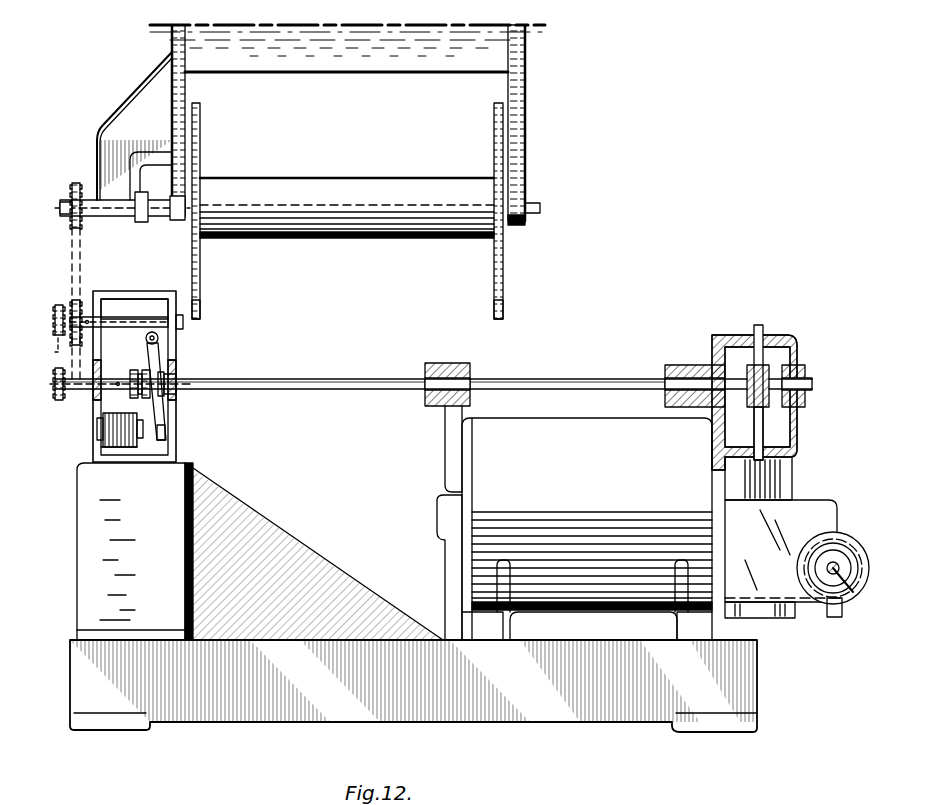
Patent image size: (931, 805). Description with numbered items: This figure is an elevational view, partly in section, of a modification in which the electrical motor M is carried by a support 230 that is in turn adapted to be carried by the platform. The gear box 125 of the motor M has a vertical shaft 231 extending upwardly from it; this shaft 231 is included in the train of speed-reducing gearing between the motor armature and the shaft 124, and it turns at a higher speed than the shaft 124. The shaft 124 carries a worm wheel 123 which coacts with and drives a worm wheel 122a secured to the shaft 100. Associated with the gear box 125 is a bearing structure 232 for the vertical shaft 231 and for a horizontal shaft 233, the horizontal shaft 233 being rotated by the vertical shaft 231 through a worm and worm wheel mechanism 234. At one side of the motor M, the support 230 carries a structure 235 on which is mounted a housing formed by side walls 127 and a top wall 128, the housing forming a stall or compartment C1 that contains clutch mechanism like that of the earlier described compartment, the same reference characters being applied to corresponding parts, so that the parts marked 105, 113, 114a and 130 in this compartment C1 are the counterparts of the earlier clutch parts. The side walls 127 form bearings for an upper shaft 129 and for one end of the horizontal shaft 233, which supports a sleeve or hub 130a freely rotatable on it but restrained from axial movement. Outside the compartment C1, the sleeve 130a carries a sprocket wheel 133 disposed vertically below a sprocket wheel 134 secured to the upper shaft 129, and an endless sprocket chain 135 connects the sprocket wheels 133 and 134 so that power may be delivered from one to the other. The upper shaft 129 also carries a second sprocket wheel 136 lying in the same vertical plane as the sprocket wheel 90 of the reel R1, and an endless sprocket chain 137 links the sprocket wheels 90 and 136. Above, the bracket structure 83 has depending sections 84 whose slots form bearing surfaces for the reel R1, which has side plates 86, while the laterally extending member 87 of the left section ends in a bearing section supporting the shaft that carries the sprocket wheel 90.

The bracket structure 83 is at (537, 57).
The depending sections 84 is at (202, 128).
The side plates 86 is at (202, 270).
The laterally extending member 87 is at (140, 88).
The sprocket wheel 90 is at (78, 185).
The shaft 100 is at (810, 610).
The main shaft 105 is at (176, 376).
The lever 113 is at (155, 432).
The solenoid armature 114a is at (112, 444).
The worm wheel 122a is at (835, 620).
The worm wheel 123 is at (843, 548).
The shaft 124 is at (846, 586).
The gear box 125 is at (812, 502).
The side walls 127 is at (172, 416).
The top wall 128 is at (117, 294).
The upper shaft 129 is at (140, 326).
The clutch member 130 is at (103, 392).
The sleeve or hub 130a is at (75, 392).
The sprocket wheel 133 is at (63, 397).
The sprocket wheel 134 is at (62, 304).
The endless sprocket chain 135 is at (55, 352).
The second sprocket wheel 136 is at (80, 282).
The endless sprocket chain 137 is at (72, 240).
The support 230 is at (540, 722).
The vertical shaft 231 is at (765, 430).
The bearing structure 232 is at (800, 347).
The horizontal shaft 233 is at (548, 380).
The worm and worm wheel mechanism 234 is at (772, 367).
The structure 235 is at (160, 482).
The compartment C1 is at (146, 305).
The reel R1 is at (412, 240).
The electrical motor M is at (492, 455).